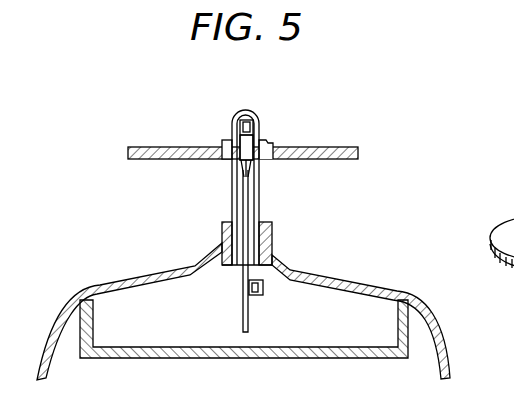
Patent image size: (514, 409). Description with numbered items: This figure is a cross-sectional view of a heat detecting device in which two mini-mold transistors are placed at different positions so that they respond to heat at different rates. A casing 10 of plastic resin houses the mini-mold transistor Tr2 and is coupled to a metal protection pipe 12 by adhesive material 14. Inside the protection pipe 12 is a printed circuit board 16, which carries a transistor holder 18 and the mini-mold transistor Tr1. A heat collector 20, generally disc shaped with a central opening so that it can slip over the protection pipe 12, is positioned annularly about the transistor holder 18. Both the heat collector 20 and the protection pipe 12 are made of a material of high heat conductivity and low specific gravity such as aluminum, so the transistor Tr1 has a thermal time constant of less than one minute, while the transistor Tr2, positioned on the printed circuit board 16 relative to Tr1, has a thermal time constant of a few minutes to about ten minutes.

The casing 10 is at (450, 331).
The protection pipe 12 is at (232, 205).
The adhesive material 14 is at (265, 242).
The printed circuit board 16 is at (246, 207).
The transistor holder 18 is at (242, 145).
The heat collector 20 is at (357, 150).
The mini-mold transistor Tr1 is at (245, 125).
The mini-mold transistor Tr2 is at (263, 286).